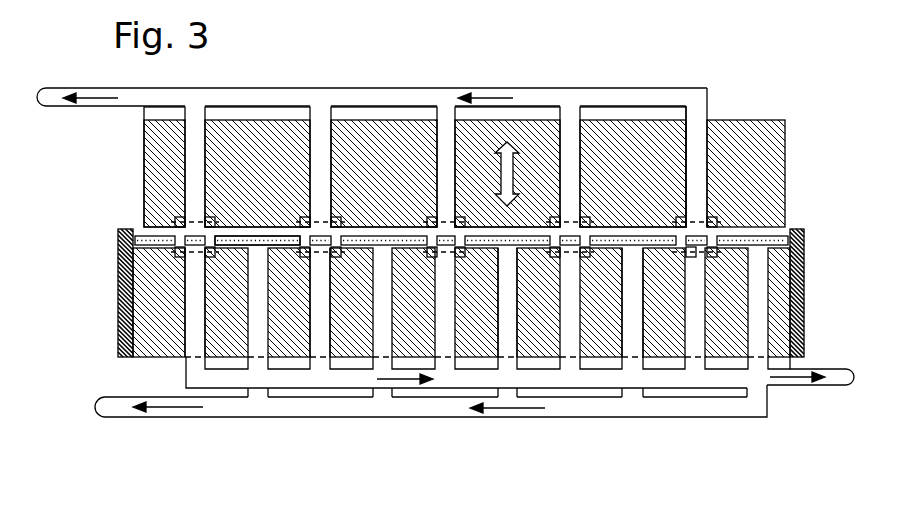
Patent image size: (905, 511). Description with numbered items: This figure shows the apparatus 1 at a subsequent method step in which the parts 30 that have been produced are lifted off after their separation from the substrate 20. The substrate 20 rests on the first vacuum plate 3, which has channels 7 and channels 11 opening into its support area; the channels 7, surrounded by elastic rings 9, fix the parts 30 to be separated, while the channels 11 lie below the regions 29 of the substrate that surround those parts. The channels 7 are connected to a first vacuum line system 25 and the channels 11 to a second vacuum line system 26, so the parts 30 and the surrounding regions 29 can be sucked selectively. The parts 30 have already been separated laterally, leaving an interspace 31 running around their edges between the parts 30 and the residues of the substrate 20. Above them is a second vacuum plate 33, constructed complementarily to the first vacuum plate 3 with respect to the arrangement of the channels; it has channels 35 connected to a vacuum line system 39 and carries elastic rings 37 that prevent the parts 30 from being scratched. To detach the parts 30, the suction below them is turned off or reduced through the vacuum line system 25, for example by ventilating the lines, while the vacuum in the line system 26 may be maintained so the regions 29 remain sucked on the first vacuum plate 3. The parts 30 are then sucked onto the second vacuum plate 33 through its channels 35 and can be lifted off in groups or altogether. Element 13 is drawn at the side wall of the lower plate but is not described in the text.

The apparatus 1 is at (756, 32).
The first vacuum plate 3 is at (150, 311).
The channels 7 is at (312, 364).
The elastic rings 9 is at (715, 252).
The channels 11 is at (626, 358).
The side wall 13 is at (120, 232).
The substrate 20 is at (768, 232).
The first vacuum line system 25 is at (812, 388).
The second vacuum line system 26 is at (363, 418).
The regions of the substrate 29 is at (223, 238).
The parts 30 is at (322, 243).
The interspace 31 is at (183, 226).
The second vacuum plate 33 is at (748, 131).
The channels 35 is at (695, 132).
The elastic rings 37 is at (678, 224).
The vacuum line system 39 is at (573, 90).